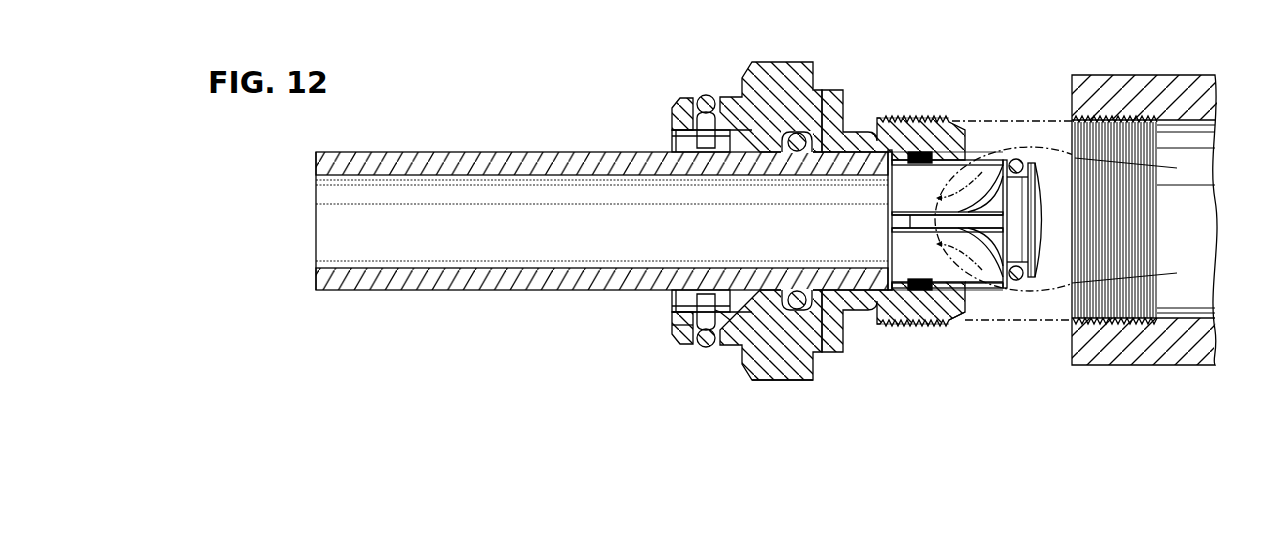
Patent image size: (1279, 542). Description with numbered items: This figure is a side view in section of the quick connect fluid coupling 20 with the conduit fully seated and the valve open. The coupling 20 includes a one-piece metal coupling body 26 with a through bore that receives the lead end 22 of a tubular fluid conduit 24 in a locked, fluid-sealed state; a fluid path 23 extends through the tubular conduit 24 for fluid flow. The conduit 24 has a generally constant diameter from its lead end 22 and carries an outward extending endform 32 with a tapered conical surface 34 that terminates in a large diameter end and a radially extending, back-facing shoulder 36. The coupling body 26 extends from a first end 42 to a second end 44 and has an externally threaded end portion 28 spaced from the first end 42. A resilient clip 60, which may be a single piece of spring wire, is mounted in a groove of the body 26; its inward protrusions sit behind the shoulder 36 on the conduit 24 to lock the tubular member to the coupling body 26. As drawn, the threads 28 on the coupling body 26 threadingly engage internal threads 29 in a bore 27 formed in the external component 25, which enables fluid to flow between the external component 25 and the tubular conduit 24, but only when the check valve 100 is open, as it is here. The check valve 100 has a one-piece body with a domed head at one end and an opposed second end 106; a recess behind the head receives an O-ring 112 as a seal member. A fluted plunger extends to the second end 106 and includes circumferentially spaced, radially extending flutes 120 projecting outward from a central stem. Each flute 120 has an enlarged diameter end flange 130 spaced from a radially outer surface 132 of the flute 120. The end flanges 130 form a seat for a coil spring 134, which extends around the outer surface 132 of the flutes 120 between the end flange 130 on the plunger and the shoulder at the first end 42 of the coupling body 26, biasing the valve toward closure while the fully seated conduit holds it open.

The quick connect fluid coupling 20 is at (607, 112).
The lead end of tubular conduit 22 is at (821, 106).
The fluid path 23 is at (445, 263).
The tubular fluid conduit 24 is at (496, 146).
The external component 25 is at (1190, 55).
The coupling body 26 is at (740, 58).
The bore of external component 27 is at (1178, 126).
The externally threaded end portion 28 is at (910, 120).
The internal threads 29 is at (1102, 122).
The endform 32 is at (723, 318).
The tapered conical surface 34 is at (725, 312).
The back-facing shoulder 36 is at (720, 310).
The first end of coupling body 42 is at (972, 143).
The second end of coupling body 44 is at (672, 325).
The resilient clip 60 is at (702, 96).
The check valve 100 is at (934, 176).
The second end of valve body 106 is at (888, 252).
The O-ring 112 is at (1003, 280).
The flutes 120 is at (921, 191).
The end flange 130 is at (906, 152).
The radially outer surface of flute 132 is at (973, 282).
The coil spring 134 is at (947, 308).